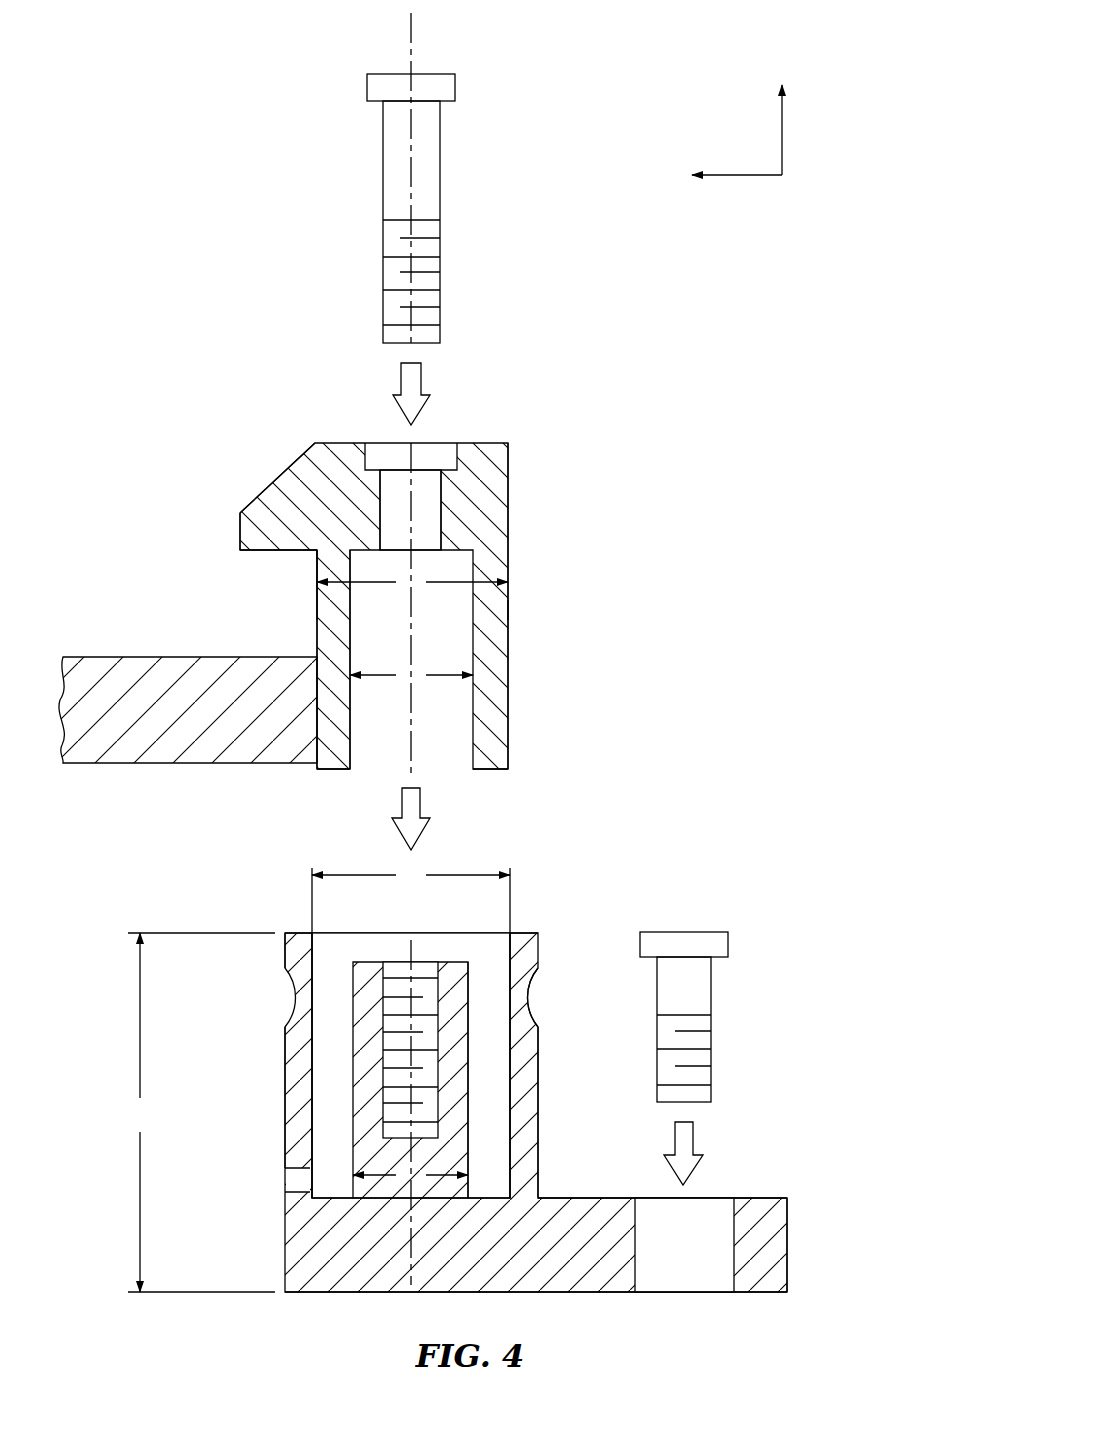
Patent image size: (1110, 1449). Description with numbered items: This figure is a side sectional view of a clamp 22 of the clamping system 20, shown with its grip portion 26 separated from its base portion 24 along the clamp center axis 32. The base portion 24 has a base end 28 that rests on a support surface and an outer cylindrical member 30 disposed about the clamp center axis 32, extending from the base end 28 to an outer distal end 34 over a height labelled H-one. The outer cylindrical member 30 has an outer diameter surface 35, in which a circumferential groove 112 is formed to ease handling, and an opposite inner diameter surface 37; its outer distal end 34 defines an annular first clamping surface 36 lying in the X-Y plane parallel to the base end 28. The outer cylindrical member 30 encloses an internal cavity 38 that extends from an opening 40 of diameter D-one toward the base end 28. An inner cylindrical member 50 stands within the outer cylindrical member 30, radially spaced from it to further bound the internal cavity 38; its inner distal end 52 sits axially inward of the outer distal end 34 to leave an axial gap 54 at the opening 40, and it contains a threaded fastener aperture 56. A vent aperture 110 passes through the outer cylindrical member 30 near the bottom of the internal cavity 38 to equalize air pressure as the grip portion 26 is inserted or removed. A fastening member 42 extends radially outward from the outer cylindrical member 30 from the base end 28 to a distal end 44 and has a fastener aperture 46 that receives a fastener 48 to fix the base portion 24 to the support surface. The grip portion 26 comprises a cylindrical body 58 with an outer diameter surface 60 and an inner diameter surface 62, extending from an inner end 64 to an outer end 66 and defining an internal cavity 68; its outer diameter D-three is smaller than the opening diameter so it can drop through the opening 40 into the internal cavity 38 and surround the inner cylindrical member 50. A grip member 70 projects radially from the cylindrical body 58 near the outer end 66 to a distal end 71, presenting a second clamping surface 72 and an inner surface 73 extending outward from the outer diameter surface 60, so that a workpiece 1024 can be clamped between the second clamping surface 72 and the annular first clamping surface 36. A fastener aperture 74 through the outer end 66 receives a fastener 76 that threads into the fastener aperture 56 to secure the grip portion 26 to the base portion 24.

The clamping system 20 is at (604, 60).
The clamp 22 is at (282, 94).
The base portion 24 is at (257, 1112).
The grip portion 26 is at (514, 557).
The base end 28 is at (342, 1293).
The outer cylindrical member 30 is at (541, 1057).
The clamp center axis 32 is at (412, 28).
The outer distal end 34 is at (528, 920).
The outer diameter surface 35 is at (286, 955).
The annular first clamping surface 36 is at (300, 933).
The inner diameter surface 37 is at (318, 1062).
The internal cavity 38 is at (488, 1135).
The opening 40 is at (426, 920).
The fastening member 42 is at (791, 1222).
The distal end 44 is at (762, 1197).
The fastener aperture 46 is at (694, 1266).
The fastener 48 is at (700, 971).
The inner cylindrical member 50 is at (366, 1110).
The inner distal end 52 is at (355, 958).
The axial gap 54 is at (466, 958).
The fastener aperture 56 is at (392, 1005).
The cylindrical body 58 is at (514, 620).
The outer diameter surface 60 is at (316, 686).
The inner diameter surface 62 is at (348, 650).
The inner end 64 is at (328, 772).
The outer end 66 is at (500, 424).
The internal cavity 68 is at (372, 600).
The grip member 70 is at (291, 462).
The distal end 71 is at (240, 522).
The second clamping surface 72 is at (266, 550).
The inner surface 73 is at (292, 550).
The fastener aperture 74 is at (432, 497).
The fastener 76 is at (440, 176).
The vent aperture 110 is at (296, 1180).
The circumferential groove 112 is at (533, 1003).
The workpiece 1024 is at (120, 675).